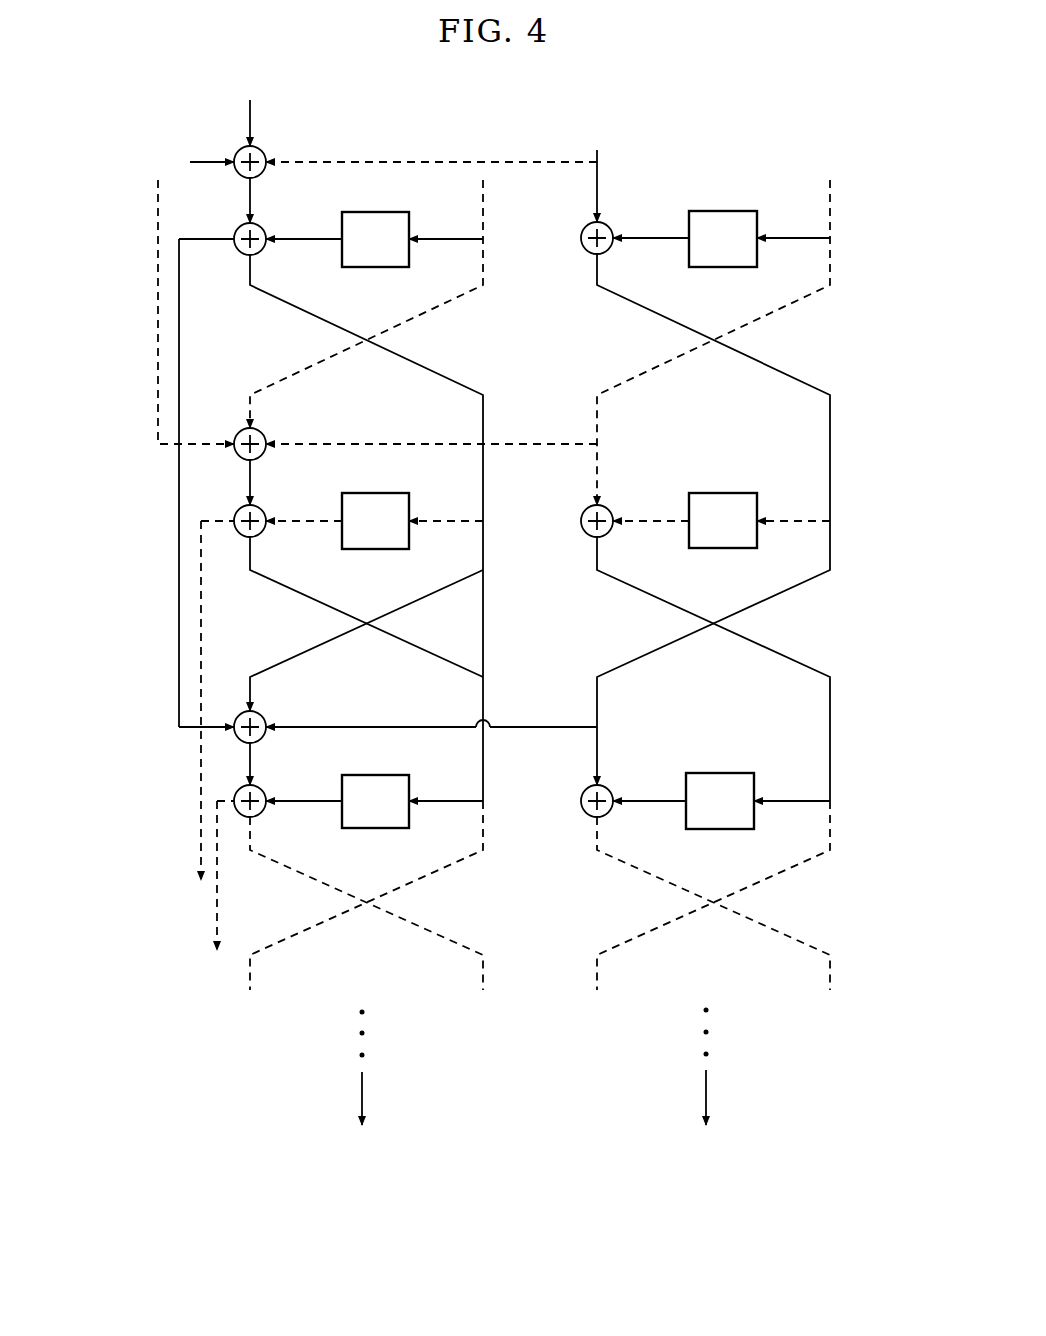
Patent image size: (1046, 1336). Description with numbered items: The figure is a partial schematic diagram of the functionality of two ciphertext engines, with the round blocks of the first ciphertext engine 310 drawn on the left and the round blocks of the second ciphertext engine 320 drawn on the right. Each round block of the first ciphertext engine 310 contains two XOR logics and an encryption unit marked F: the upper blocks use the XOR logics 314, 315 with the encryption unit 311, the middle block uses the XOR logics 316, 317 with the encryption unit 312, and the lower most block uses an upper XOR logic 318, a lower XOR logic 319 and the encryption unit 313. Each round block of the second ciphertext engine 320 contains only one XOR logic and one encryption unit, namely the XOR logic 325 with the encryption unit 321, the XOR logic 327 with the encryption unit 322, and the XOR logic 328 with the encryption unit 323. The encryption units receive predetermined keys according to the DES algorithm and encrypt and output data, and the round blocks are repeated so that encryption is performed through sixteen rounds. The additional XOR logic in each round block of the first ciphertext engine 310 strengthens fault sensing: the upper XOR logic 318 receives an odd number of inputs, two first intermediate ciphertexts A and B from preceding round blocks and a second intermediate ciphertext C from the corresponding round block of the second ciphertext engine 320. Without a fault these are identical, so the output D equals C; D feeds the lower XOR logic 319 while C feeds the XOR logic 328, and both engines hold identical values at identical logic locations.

The first ciphertext engine 310 is at (132, 180).
The second ciphertext engine 320 is at (862, 180).
The encryption unit 311 is at (357, 212).
The encryption unit 312 is at (357, 493).
The encryption unit 313 is at (357, 775).
The XOR logic 314 is at (262, 174).
The XOR logic 315 is at (262, 251).
The XOR logic 316 is at (262, 456).
The XOR logic 317 is at (262, 533).
The upper XOR logic 318 is at (262, 739).
The lower XOR logic 319 is at (262, 813).
The encryption unit 321 is at (705, 211).
The encryption unit 322 is at (705, 493).
The encryption unit 323 is at (702, 773).
The XOR logic 325 is at (609, 250).
The XOR logic 327 is at (609, 533).
The XOR logic 328 is at (609, 813).